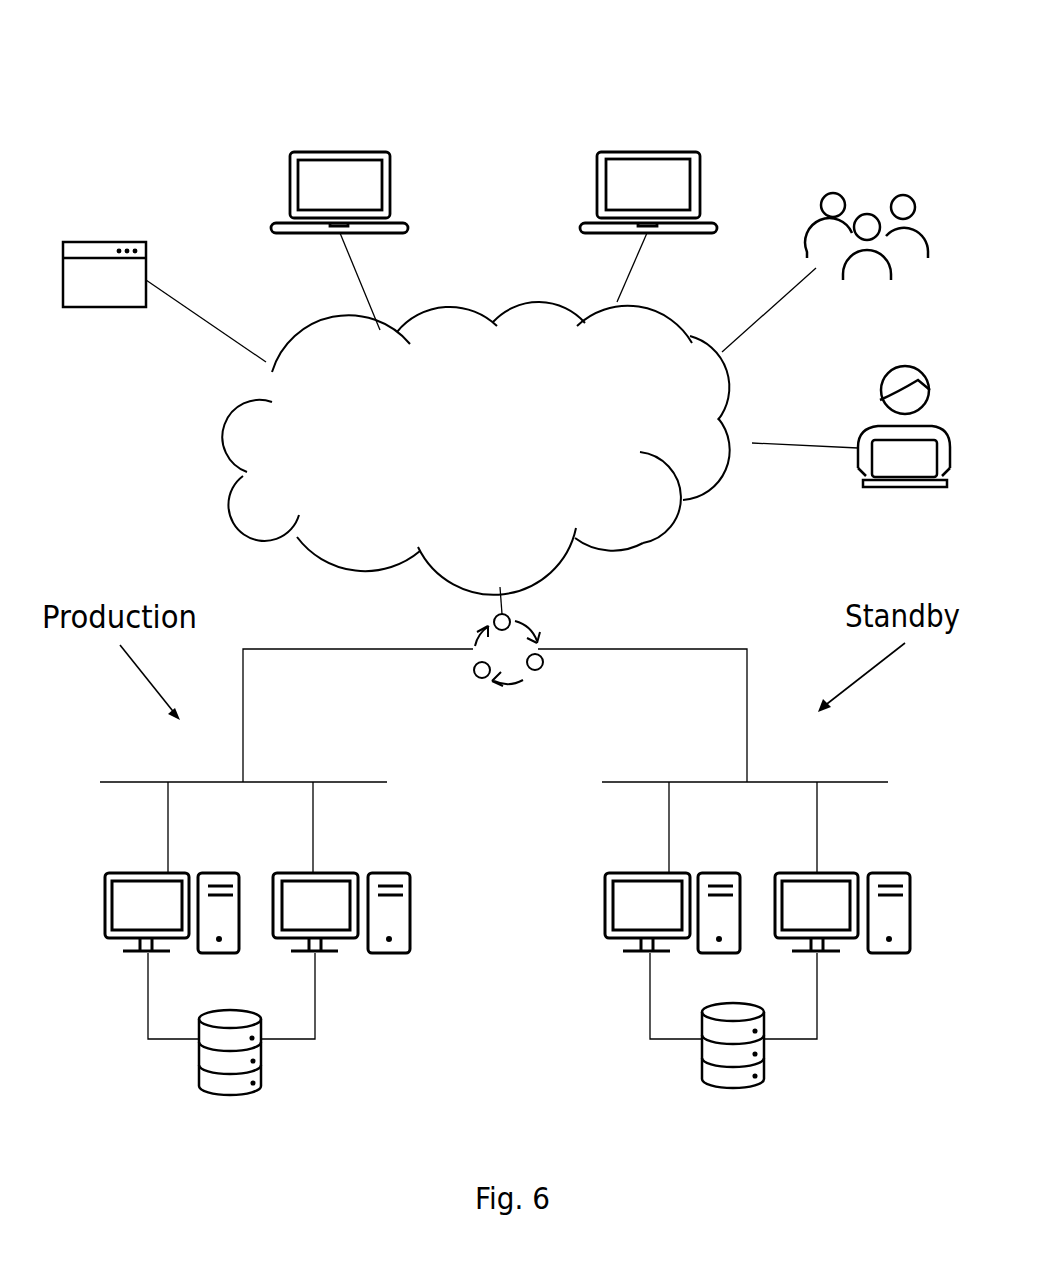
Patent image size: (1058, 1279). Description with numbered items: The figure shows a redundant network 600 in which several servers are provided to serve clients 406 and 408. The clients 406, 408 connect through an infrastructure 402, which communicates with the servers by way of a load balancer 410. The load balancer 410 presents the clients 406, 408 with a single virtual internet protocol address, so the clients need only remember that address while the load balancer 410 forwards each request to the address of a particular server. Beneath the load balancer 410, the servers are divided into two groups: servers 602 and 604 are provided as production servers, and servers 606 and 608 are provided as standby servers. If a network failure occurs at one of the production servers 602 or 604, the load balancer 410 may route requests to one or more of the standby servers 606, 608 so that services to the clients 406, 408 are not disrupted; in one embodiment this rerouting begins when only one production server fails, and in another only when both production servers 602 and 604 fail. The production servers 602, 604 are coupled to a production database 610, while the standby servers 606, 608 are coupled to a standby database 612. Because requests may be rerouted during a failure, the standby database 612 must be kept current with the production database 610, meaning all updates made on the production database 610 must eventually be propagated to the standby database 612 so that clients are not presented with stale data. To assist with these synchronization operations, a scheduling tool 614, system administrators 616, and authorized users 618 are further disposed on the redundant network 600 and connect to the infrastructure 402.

The redundant network 600 is at (148, 93).
The infrastructure 402 is at (475, 448).
The client 406 is at (339, 207).
The client 408 is at (648, 193).
The load balancer 410 is at (508, 668).
The production server 602 is at (165, 894).
The production server 604 is at (341, 894).
The standby server 606 is at (665, 892).
The standby server 608 is at (842, 892).
The production database 610 is at (230, 1080).
The standby database 612 is at (733, 1074).
The scheduling tool 614 is at (164, 302).
The system administrators 616 is at (851, 449).
The authorized users 618 is at (825, 272).